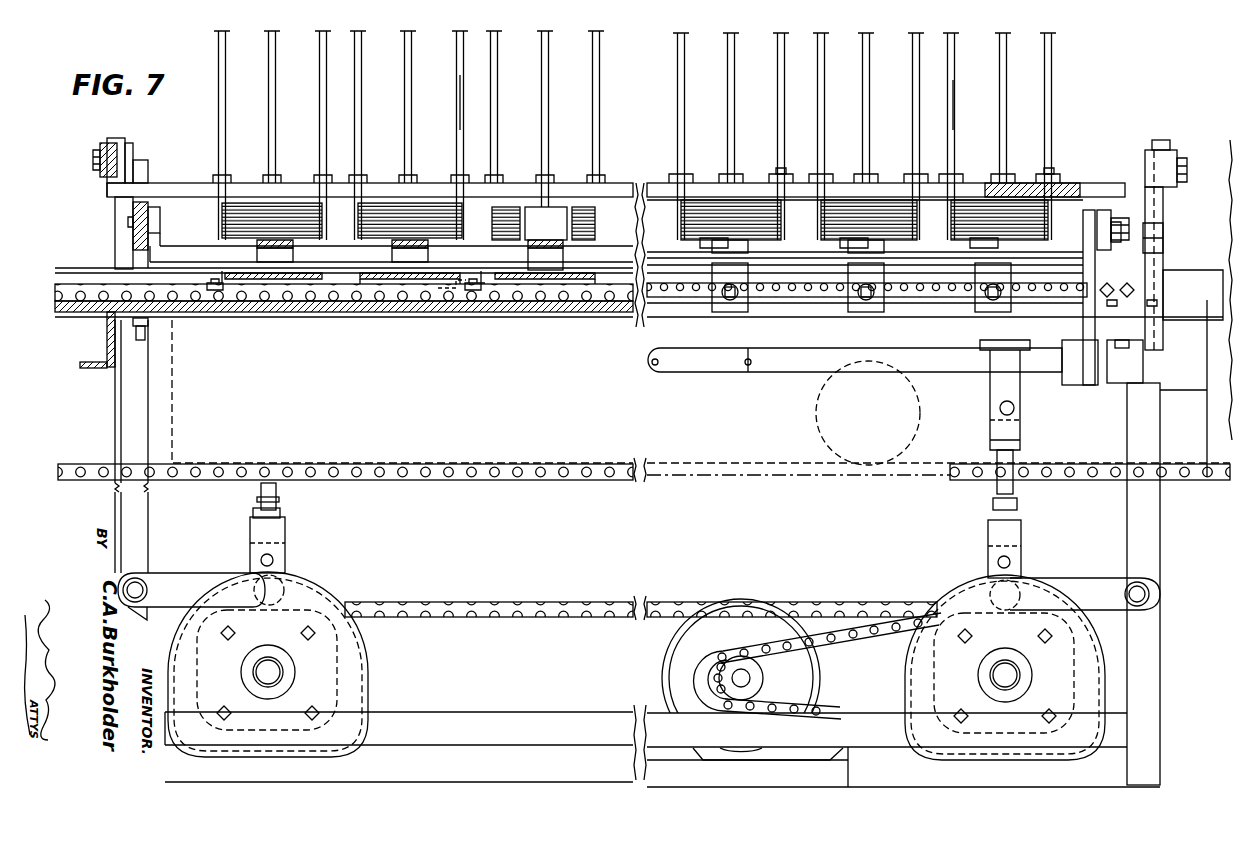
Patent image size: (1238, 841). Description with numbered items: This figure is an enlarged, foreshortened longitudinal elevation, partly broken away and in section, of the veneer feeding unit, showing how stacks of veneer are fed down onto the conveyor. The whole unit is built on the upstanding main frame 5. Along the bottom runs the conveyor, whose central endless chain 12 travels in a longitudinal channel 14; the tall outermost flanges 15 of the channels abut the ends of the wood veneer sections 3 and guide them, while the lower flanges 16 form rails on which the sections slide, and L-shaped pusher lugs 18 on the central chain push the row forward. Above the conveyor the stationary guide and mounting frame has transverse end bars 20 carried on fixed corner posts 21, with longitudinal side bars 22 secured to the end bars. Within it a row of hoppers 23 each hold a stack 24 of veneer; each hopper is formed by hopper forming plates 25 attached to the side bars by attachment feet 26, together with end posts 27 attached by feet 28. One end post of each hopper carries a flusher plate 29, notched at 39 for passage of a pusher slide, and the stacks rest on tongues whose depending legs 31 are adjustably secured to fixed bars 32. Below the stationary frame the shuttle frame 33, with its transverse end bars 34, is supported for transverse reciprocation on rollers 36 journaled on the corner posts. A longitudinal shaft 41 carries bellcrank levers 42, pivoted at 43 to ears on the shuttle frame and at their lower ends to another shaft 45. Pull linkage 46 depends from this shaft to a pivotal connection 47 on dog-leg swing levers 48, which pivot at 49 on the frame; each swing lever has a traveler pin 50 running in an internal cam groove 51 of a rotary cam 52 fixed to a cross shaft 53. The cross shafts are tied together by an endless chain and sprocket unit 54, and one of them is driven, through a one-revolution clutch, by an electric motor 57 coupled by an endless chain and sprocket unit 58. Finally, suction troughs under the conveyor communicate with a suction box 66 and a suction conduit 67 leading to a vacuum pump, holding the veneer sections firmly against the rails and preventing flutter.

The wood veneer sections 3 is at (268, 280).
The main frame 5 is at (107, 389).
The central endless chain 12 is at (373, 300).
The longitudinal channel 14 is at (308, 290).
The outermost flanges 15 is at (607, 253).
The remaining flanges 16 is at (415, 300).
The pusher lugs 18 is at (216, 300).
The transverse end bars 20 is at (100, 170).
The corner posts 21 is at (120, 205).
The longitudinal side bars 22 is at (618, 184).
The hoppers 23 is at (659, 129).
The stack 24 is at (375, 210).
The hopper forming plates 25 is at (463, 98).
The attachment feet 26 is at (812, 182).
The end posts 27 is at (276, 95).
The feet 28 is at (731, 181).
The flusher plate 29 is at (550, 217).
The depending legs 31 is at (715, 300).
The fixed bars 32 is at (802, 298).
The shuttle frame 33 is at (176, 177).
The transverse end bars 34 is at (130, 235).
The rollers 36 is at (148, 253).
The notch 39 is at (545, 240).
The longitudinal shaft 41 is at (775, 356).
The bellcrank levers 42 is at (1090, 270).
The pivot 43 is at (1135, 230).
The longitudinal shaft 45 is at (710, 355).
The pull linkage 46 is at (272, 505).
The pivotal connection 47 is at (273, 560).
The dog-leg swing levers 48 is at (180, 577).
The pivot 49 is at (135, 580).
The traveler pin 50 is at (280, 590).
The internal cam groove 51 is at (335, 658).
The rotary cam 52 is at (355, 675).
The cross shaft 53 is at (265, 668).
The endless chain and sprocket unit 54 is at (472, 601).
The electric motor 57 is at (700, 655).
The endless chain and sprocket unit 58 is at (815, 630).
The suction box 66 is at (453, 455).
The suction conduit 67 is at (824, 440).